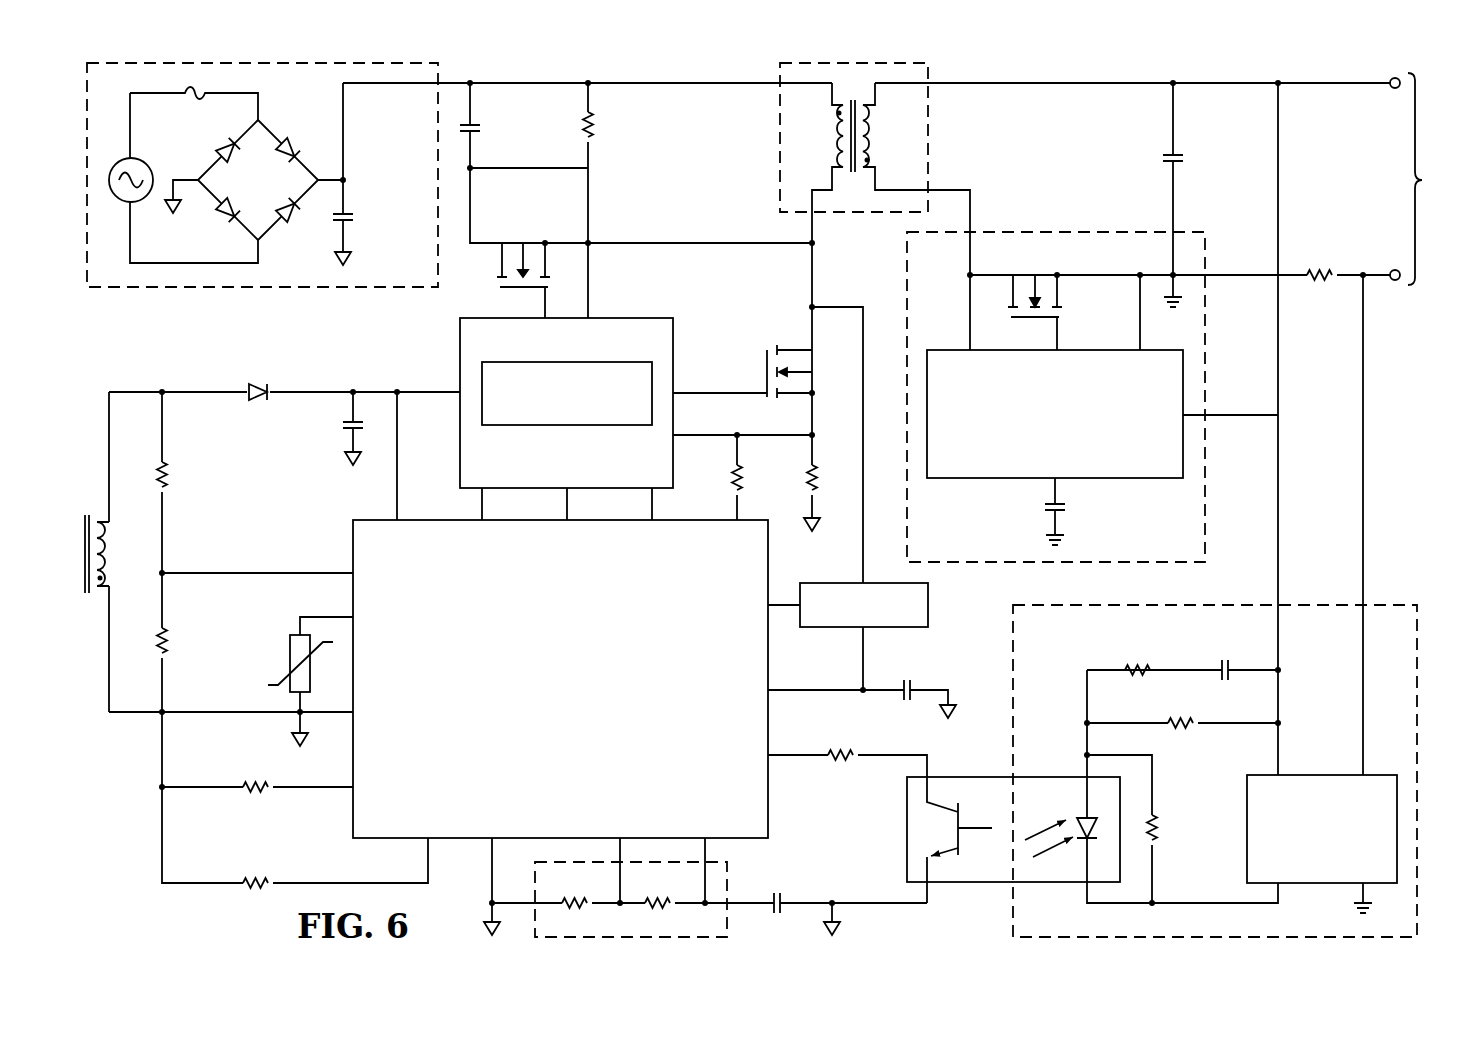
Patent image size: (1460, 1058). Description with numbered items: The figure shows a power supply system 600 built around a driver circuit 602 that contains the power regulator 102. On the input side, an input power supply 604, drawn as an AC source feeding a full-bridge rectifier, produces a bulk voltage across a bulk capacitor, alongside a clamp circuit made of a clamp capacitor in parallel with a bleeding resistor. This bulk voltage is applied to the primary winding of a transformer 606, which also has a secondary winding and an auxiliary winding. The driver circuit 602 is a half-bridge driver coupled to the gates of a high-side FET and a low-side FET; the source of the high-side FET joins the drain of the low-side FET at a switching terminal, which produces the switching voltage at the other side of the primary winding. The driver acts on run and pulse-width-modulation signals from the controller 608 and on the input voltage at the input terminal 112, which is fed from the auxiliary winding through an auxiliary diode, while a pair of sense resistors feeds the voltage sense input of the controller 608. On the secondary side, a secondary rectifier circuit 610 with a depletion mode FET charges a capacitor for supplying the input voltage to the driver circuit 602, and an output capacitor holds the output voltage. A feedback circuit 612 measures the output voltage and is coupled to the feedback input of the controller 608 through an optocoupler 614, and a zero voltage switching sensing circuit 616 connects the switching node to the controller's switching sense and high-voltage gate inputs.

The power supply system 600 is at (133, 897).
The driver circuit 602 is at (629, 318).
The power regulator circuit 102 is at (567, 427).
The input terminal 112 is at (458, 397).
The input power supply 604 is at (195, 291).
The transformer 606 is at (774, 123).
The controller 608 is at (560, 679).
The secondary rectifier circuit 610 is at (1096, 231).
The feedback circuit 612 is at (1215, 771).
The optocoupler 614 is at (906, 840).
The zero voltage switching sensing circuit 616 is at (833, 629).